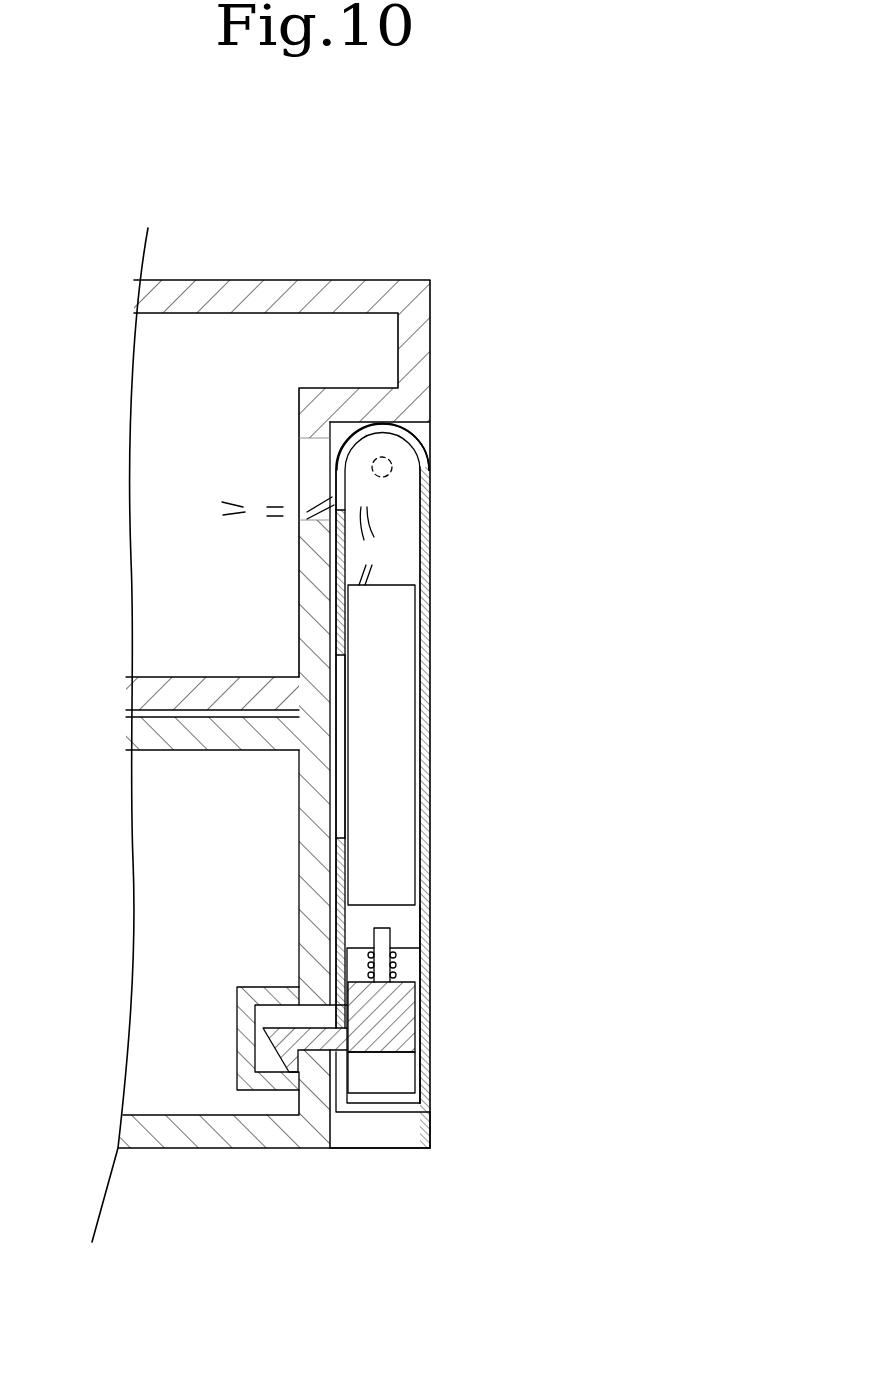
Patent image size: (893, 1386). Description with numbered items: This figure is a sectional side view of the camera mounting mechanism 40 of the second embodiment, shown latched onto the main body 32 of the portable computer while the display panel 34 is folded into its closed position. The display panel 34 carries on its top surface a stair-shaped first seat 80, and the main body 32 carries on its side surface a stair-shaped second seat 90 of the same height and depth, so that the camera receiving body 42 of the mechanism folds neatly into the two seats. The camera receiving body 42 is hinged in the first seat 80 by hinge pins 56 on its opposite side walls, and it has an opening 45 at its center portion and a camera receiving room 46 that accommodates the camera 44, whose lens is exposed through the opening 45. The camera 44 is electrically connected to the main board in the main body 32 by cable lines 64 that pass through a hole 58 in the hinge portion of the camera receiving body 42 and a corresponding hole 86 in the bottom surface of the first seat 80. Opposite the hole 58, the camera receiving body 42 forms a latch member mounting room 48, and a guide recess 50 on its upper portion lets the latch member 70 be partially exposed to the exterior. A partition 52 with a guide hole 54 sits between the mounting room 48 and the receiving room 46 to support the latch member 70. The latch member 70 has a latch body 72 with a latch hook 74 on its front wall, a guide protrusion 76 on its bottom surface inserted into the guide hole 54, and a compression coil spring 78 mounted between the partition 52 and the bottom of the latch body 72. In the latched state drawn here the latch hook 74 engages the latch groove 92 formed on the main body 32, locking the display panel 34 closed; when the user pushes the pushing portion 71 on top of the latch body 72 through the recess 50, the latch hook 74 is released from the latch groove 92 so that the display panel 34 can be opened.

The main body 32 is at (207, 1150).
The display panel 34 is at (417, 323).
The camera mounting mechanism 40 is at (450, 629).
The camera receiving body 42 is at (425, 800).
The camera 44 is at (400, 738).
The opening 45 is at (343, 650).
The camera receiving room 46 is at (412, 557).
The latch member mounting room 48 is at (413, 1100).
The guide recess 50 is at (427, 1037).
The partition 52 is at (363, 940).
The guide hole 54 is at (403, 942).
The hinge pin 56 is at (393, 465).
The hole 58 is at (328, 427).
The cable lines 64 is at (374, 537).
The latch member 70 is at (382, 1068).
The pushing portion 71 is at (410, 1068).
The latch body 72 is at (407, 1018).
The latch hook 74 is at (263, 1040).
The guide protrusion 76 is at (387, 930).
The compression coil spring 78 is at (370, 967).
The first seat 80 is at (421, 427).
The hole 86 is at (312, 460).
The second seat 90 is at (420, 1130).
The latch groove 92 is at (258, 1010).